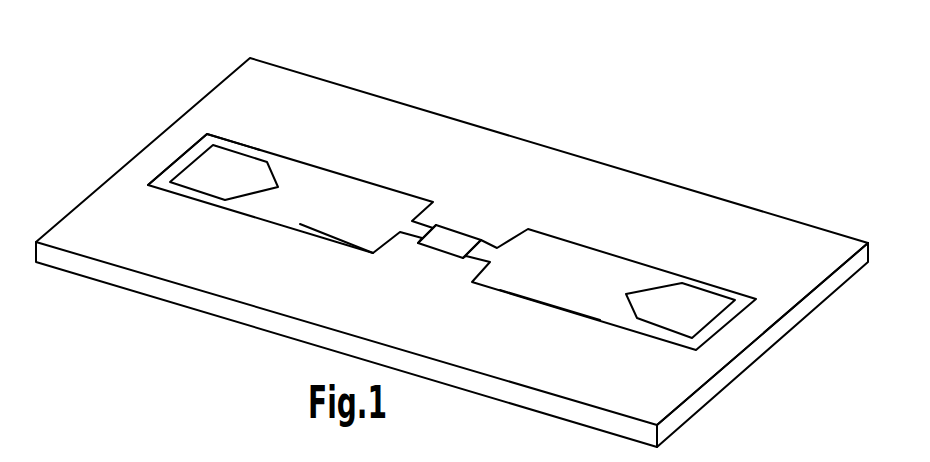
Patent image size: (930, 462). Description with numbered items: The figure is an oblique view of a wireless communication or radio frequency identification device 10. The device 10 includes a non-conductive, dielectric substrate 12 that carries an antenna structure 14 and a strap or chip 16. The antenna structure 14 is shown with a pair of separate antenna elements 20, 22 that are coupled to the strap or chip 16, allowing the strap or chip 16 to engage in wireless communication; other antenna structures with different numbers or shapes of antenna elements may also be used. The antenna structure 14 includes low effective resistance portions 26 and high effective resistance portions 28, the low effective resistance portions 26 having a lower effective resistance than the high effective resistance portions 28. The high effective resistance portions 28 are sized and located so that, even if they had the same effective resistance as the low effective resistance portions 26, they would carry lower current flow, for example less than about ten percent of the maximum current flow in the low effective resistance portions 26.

The radio frequency identification device 10 is at (181, 53).
The substrate 12 is at (172, 292).
The antenna structure 14 is at (376, 136).
The strap or chip 16 is at (450, 242).
The antenna element 20 is at (162, 147).
The antenna element 22 is at (741, 344).
The low effective resistance portions 26 is at (343, 225).
The high effective resistance portions 28 is at (225, 178).